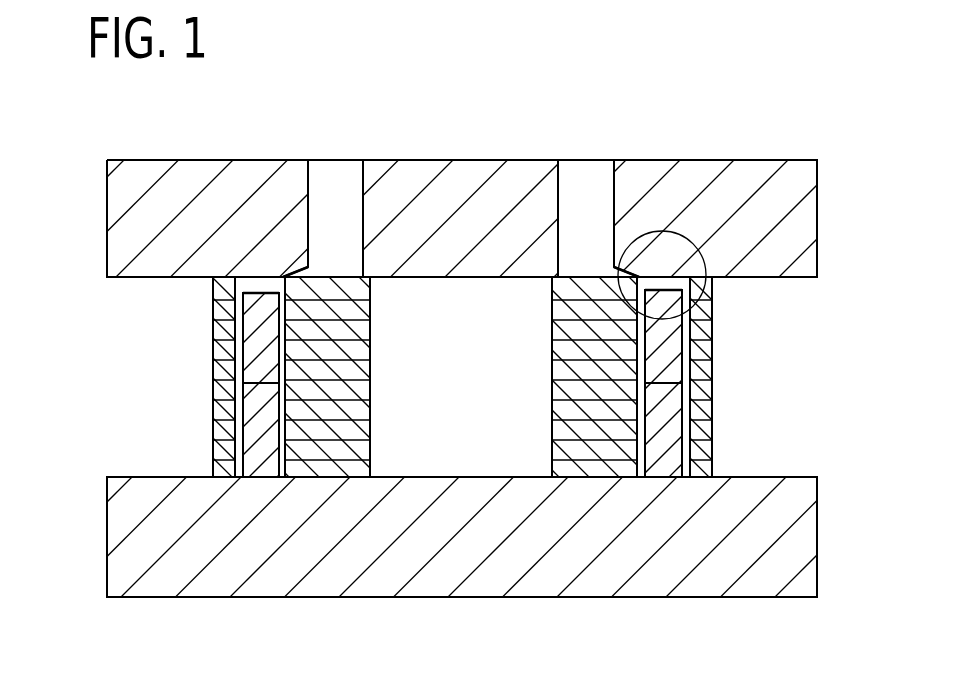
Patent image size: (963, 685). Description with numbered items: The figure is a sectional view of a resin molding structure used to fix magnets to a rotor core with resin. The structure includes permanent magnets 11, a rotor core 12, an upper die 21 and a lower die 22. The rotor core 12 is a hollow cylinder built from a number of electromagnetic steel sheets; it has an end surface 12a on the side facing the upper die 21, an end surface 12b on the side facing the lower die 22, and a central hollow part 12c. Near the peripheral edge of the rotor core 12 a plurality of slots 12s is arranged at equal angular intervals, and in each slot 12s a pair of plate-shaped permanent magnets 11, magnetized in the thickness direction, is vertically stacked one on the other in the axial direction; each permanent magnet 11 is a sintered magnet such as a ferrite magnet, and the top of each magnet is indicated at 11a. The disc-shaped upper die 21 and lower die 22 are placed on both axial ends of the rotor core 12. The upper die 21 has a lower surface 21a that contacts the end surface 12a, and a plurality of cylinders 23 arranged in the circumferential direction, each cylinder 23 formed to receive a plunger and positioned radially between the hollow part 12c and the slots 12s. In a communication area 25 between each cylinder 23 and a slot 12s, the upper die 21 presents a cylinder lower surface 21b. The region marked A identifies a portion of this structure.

The upper die 21 is at (122, 190).
The lower surface 21a is at (763, 277).
The cylinder lower surface 21b is at (300, 273).
The lower die 22 is at (132, 558).
The cylinder 23 is at (333, 180).
The communication area 25 is at (305, 262).
The permanent magnet 11 is at (255, 432).
The top surface of insert member 11a is at (256, 294).
The rotor core 12 is at (300, 452).
The end surface 12a is at (575, 275).
The end surface 12b is at (593, 477).
The hollow part 12c is at (437, 300).
The slot 12s is at (262, 289).
The enlarged region A is at (705, 262).